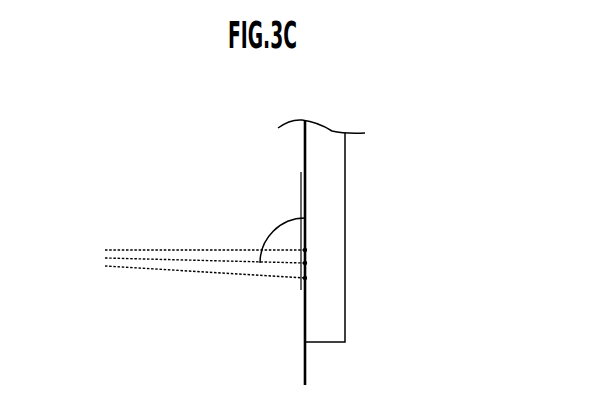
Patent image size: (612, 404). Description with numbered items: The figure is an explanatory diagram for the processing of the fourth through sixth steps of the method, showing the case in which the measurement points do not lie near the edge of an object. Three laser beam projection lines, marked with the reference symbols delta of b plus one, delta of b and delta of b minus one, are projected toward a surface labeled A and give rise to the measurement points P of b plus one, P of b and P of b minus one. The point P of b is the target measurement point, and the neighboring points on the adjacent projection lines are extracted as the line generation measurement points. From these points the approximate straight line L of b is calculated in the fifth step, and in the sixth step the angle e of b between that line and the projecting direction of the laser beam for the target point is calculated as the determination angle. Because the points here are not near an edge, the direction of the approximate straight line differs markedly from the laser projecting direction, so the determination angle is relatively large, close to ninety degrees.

The workpiece surface A is at (304, 150).